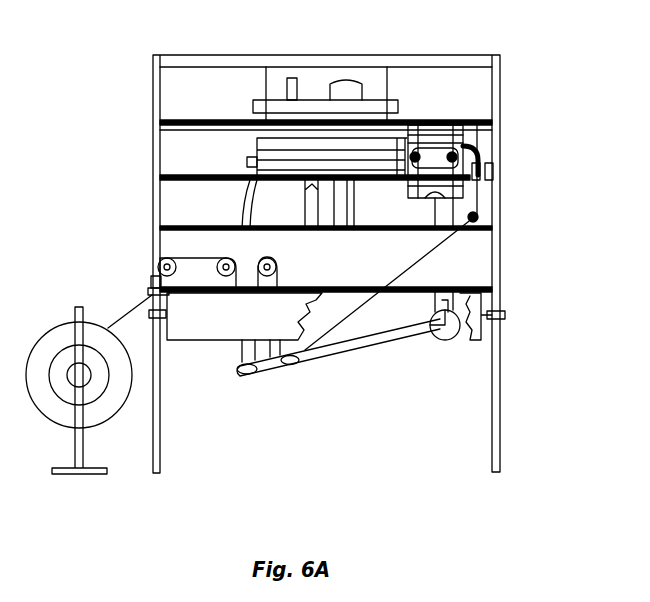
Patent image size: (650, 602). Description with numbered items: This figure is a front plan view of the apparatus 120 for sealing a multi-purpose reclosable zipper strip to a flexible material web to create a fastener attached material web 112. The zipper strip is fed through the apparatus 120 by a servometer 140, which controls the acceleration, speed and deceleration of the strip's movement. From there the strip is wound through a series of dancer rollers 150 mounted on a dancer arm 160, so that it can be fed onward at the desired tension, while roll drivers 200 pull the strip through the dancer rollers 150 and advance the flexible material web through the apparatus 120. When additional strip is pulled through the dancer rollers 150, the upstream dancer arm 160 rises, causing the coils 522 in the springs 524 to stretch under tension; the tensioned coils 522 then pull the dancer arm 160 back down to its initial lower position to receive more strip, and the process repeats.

The apparatus 120 is at (463, 33).
The roll drivers 200 is at (212, 120).
The fastener attached material web 112 is at (310, 80).
The servometer 140 is at (152, 280).
The dancer rollers 150 is at (290, 366).
The dancer arm 160 is at (353, 352).
The coils 522 is at (440, 342).
The springs 524 is at (447, 341).